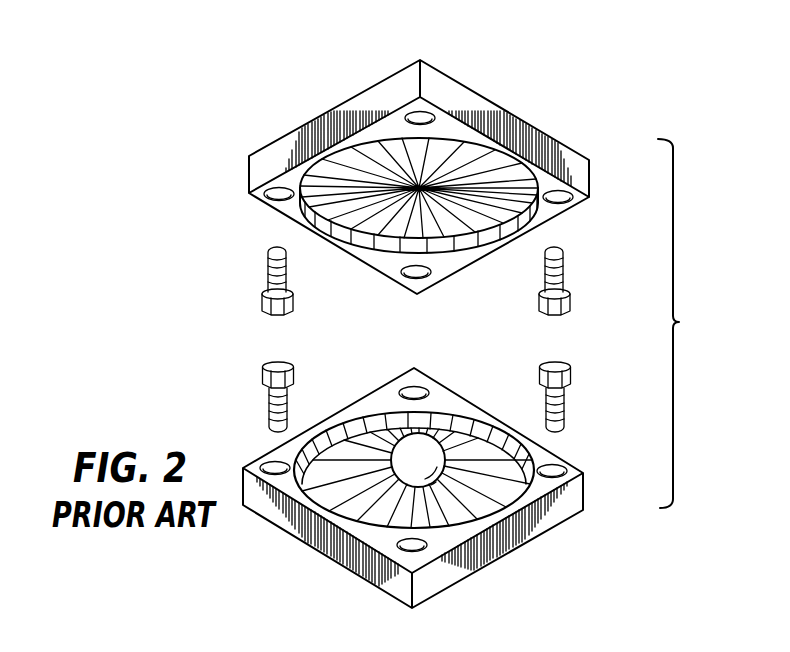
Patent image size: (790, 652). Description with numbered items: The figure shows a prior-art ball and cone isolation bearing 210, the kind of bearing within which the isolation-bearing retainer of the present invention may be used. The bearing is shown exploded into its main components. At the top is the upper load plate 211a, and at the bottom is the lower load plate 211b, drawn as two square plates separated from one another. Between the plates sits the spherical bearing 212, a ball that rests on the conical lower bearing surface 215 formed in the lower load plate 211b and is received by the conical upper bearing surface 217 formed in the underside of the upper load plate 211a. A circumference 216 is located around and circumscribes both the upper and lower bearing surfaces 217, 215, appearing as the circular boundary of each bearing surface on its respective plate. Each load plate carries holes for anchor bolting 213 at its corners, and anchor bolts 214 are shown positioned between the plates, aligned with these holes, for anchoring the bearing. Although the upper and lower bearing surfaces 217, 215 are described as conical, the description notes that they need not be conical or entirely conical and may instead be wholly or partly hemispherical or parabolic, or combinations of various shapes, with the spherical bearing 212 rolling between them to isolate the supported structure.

The ball and cone isolation bearing 210 is at (190, 112).
The upper load plate 211a is at (592, 180).
The lower load plate 211b is at (587, 493).
The spherical bearing 212 is at (407, 442).
The holes for anchor bolting 213 is at (265, 198).
The anchor bolts 214 is at (270, 308).
The lower bearing surface 215 is at (473, 443).
The circumference 216 is at (360, 145).
The upper bearing surface 217 is at (419, 187).